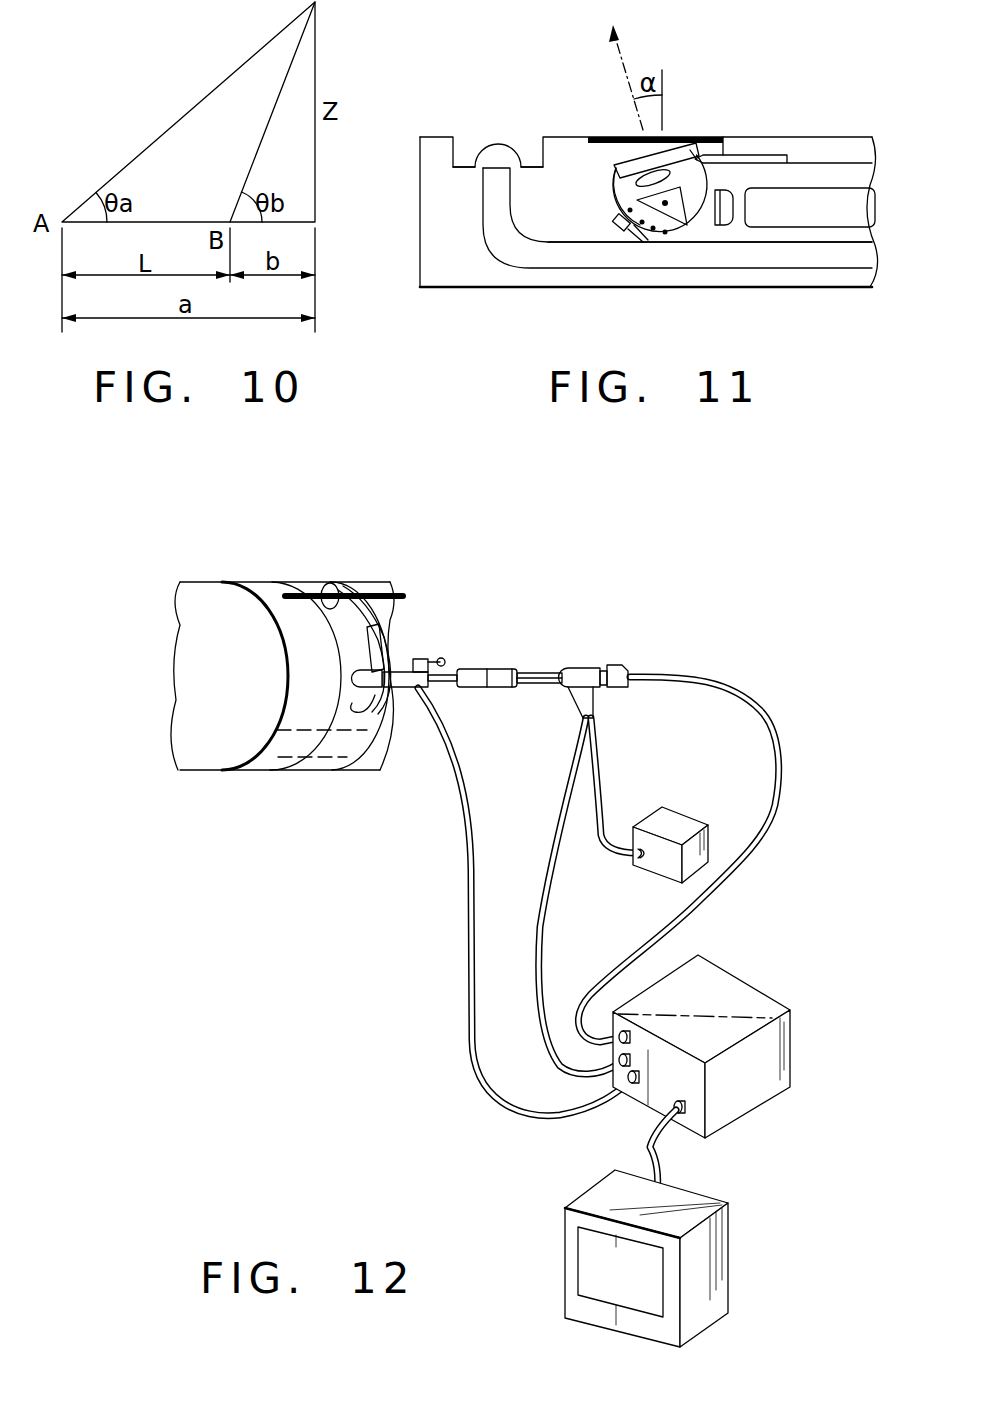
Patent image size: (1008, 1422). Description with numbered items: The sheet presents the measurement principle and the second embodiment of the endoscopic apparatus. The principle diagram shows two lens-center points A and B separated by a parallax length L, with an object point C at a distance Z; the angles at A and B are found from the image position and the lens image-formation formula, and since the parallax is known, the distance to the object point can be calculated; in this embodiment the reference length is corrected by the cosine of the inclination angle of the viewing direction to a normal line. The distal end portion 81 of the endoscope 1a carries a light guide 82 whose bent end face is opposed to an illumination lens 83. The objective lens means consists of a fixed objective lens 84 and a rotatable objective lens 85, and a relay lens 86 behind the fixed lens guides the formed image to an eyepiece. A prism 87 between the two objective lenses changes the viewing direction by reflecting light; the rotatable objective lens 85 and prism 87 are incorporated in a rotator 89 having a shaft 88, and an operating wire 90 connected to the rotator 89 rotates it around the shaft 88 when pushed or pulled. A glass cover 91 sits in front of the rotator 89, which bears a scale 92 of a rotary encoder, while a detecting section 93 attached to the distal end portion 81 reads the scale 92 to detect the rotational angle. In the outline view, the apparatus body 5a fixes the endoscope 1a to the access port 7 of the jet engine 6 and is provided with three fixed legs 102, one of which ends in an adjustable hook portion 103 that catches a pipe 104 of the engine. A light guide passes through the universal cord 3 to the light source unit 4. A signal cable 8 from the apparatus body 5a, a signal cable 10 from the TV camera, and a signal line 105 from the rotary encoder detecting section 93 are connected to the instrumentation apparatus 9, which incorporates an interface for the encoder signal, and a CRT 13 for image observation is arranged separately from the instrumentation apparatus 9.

In FIG. 11, the endoscope 1a is at (825, 122).
In FIG. 12, the endoscope 1a is at (578, 672).
In FIG. 12, the universal cord 3 is at (604, 778).
In FIG. 12, the light source unit 4 is at (683, 822).
In FIG. 12, the apparatus body 5a is at (442, 644).
In FIG. 12, the jet engine 6 is at (220, 598).
In FIG. 12, the access port 7 is at (358, 674).
In FIG. 12, the signal cable 8 is at (478, 868).
In FIG. 12, the instrumentation apparatus 9 is at (735, 985).
In FIG. 12, the signal cable 10 is at (760, 838).
In FIG. 12, the CRT 13 is at (593, 1248).
In FIG. 11, the distal end portion 81 is at (518, 308).
In FIG. 11, the light guide 82 is at (795, 260).
In FIG. 11, the illumination lens 83 is at (468, 150).
In FIG. 11, the fixed objective lens 84 is at (716, 225).
In FIG. 11, the rotatable objective lens 85 is at (660, 173).
In FIG. 11, the relay lens 86 is at (837, 217).
In FIG. 11, the prism 87 is at (683, 216).
In FIG. 11, the shaft 88 is at (678, 222).
In FIG. 11, the rotator 89 is at (620, 186).
In FIG. 11, the operating wire 90 is at (763, 153).
In FIG. 11, the glass cover 91 is at (608, 137).
In FIG. 11, the scale 92 is at (634, 238).
In FIG. 11, the detecting section 93 is at (617, 233).
In FIG. 12, the fixed legs 102 is at (392, 640).
In FIG. 12, the hook portion 103 is at (350, 590).
In FIG. 12, the pipe 104 is at (305, 594).
In FIG. 12, the signal line 105 is at (543, 953).